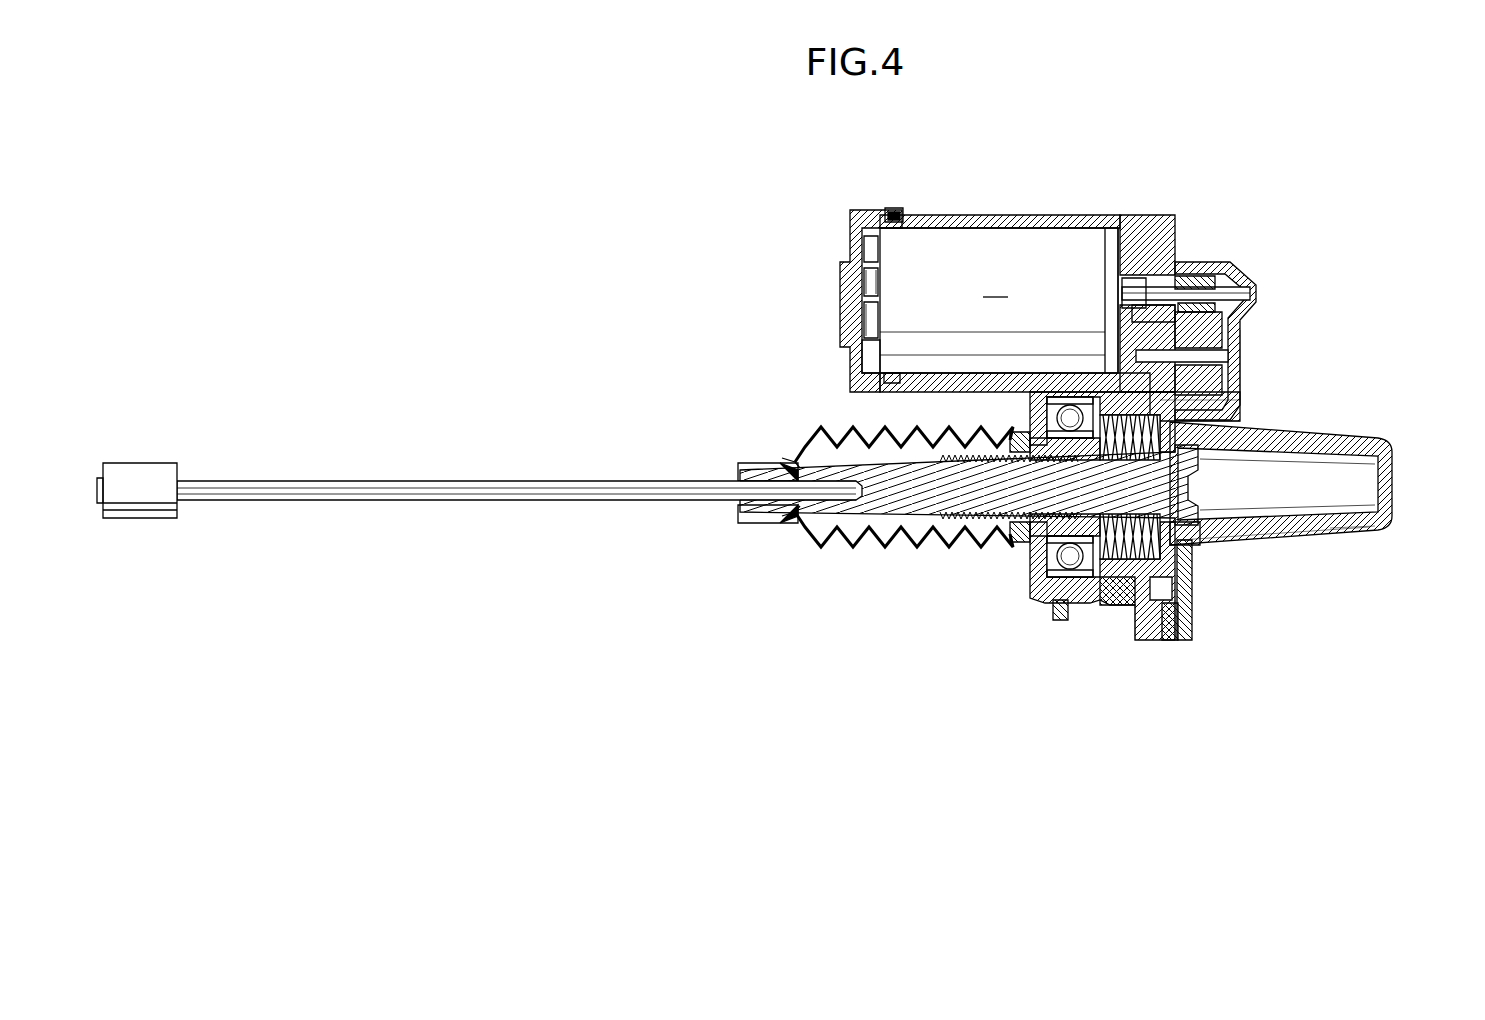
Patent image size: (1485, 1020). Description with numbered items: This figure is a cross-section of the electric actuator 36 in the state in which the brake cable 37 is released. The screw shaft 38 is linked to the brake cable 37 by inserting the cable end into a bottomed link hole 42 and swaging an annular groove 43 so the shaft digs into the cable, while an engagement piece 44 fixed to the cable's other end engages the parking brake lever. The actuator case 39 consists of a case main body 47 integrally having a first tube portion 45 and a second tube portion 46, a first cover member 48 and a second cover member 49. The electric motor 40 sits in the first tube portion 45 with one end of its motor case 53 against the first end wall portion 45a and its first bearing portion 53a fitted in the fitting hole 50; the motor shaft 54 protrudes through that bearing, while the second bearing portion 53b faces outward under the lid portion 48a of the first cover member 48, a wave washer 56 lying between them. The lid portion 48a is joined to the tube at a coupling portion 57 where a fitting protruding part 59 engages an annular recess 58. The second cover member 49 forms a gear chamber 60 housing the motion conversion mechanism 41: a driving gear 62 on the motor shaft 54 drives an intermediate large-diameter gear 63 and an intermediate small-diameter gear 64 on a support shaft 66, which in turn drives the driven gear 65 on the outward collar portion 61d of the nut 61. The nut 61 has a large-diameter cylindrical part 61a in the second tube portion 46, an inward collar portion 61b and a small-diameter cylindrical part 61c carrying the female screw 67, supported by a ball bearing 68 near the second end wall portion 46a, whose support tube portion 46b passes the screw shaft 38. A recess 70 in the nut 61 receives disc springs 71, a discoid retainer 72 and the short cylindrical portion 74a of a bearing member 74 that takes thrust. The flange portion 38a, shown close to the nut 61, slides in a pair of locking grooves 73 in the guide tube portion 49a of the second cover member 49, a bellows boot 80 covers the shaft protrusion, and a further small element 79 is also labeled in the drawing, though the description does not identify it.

The electric actuator 36 is at (1253, 270).
The brake cable 37 is at (482, 492).
The screw shaft 38 is at (905, 452).
The flange portion 38a is at (1190, 515).
The actuator case 39 is at (1204, 605).
The electric motor 40 is at (995, 287).
The motion conversion mechanism 41 is at (1191, 266).
The link hole 42 is at (830, 492).
The annular groove 43 is at (755, 460).
The engagement piece 44 is at (150, 473).
The first tube portion 45 is at (1000, 215).
The first end wall portion 45a is at (1165, 212).
The second tube portion 46 is at (1116, 598).
The second end wall portion 46a is at (1010, 556).
The support tube portion 46b is at (1000, 435).
The case main body 47 is at (1140, 383).
The first cover member 48 is at (838, 225).
The lid portion 48a is at (880, 380).
The second cover member 49 is at (1242, 400).
The guide tube portion 49a is at (1355, 527).
The fitting hole 50 is at (1130, 285).
The motor case 53 is at (950, 240).
The first bearing portion 53a is at (1157, 245).
The second bearing portion 53b is at (852, 365).
The motor shaft 54 is at (1240, 297).
The wave washer 56 is at (860, 280).
The coupling portion 57 is at (887, 198).
The annular recess 58 is at (893, 372).
The fitting protruding part 59 is at (898, 215).
The gear chamber 60 is at (1200, 275).
The nut 61 is at (1096, 600).
The large-diameter cylindrical part 61a is at (1144, 575).
The inward collar portion 61b is at (1052, 585).
The small-diameter cylindrical part 61c is at (1070, 403).
The outward collar portion 61d is at (1178, 575).
The driving gear 62 is at (1210, 281).
The intermediate large-diameter gear 63 is at (1212, 338).
The intermediate small-diameter gear 64 is at (1150, 325).
The driven gear 65 is at (1182, 625).
The support shaft 66 is at (1226, 355).
The female screw 67 is at (975, 533).
The ball bearing 68 is at (1068, 416).
The recess 70 is at (969, 485).
The disc springs 71 is at (1162, 530).
The discoid retainer 72 is at (1160, 445).
The locking grooves 73 is at (1335, 455).
The bearing member 74 is at (1180, 412).
The short cylindrical portion 74a is at (1178, 424).
The plug 79 is at (1055, 612).
The bellows boot 80 is at (792, 530).